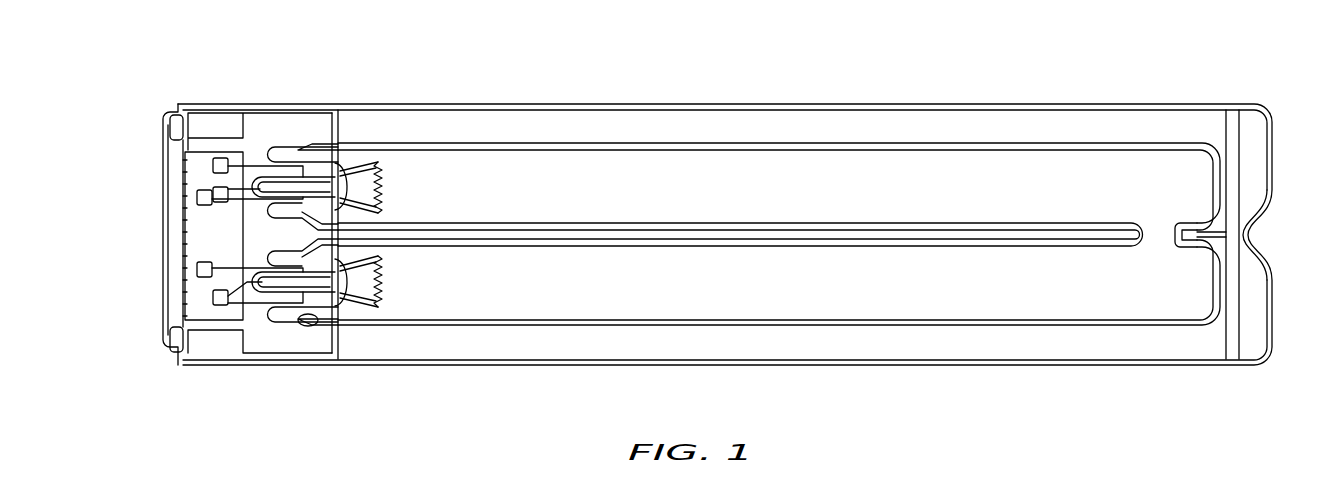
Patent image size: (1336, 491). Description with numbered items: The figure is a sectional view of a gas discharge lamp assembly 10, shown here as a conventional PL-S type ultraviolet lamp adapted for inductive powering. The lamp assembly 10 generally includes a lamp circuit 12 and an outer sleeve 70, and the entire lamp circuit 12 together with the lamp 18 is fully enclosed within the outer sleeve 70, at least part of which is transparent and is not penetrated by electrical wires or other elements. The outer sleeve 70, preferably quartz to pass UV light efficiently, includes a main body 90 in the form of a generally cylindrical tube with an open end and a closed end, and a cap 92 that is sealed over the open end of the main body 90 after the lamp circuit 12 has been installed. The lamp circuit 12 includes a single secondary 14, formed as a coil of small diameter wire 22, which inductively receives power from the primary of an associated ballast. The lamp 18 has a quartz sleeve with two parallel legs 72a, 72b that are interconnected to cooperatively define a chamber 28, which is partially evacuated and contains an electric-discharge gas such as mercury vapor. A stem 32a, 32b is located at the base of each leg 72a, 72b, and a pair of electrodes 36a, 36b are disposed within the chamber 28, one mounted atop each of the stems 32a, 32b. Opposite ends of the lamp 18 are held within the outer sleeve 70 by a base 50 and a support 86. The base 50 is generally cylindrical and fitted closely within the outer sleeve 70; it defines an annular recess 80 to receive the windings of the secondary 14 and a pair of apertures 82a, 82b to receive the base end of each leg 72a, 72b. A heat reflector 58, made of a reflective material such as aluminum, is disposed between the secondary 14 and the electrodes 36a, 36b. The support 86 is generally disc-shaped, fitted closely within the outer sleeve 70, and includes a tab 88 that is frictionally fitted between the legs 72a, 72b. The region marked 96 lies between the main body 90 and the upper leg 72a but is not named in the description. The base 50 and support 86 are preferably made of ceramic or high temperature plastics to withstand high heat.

The gas discharge lamp assembly 10 is at (1055, 90).
The lamp circuit 12 is at (215, 364).
The secondary 14 is at (203, 132).
The lamp 18 is at (845, 327).
The small diameter wire 22 is at (227, 334).
The chamber 28 is at (661, 203).
The stem 32a is at (337, 157).
The stem 32b is at (318, 318).
The electrode 36a is at (393, 180).
The electrode 36b is at (393, 282).
The base 50 is at (275, 110).
The heat reflector 58 is at (320, 320).
The outer sleeve 70 is at (703, 103).
The leg 72a is at (872, 143).
The leg 72b is at (1015, 327).
The annular recess 80 is at (193, 367).
The aperture 82a is at (305, 152).
The aperture 82b is at (305, 328).
The support 86 is at (1240, 138).
The tab 88 is at (1196, 247).
The main body 90 is at (470, 104).
The cap 92 is at (152, 118).
The top plate 96 is at (646, 141).